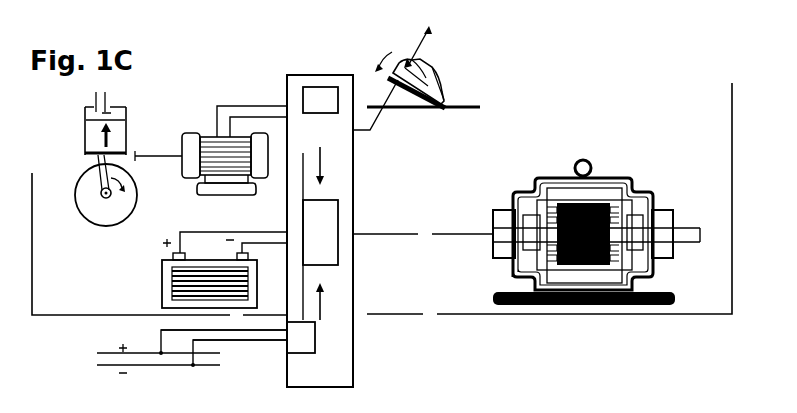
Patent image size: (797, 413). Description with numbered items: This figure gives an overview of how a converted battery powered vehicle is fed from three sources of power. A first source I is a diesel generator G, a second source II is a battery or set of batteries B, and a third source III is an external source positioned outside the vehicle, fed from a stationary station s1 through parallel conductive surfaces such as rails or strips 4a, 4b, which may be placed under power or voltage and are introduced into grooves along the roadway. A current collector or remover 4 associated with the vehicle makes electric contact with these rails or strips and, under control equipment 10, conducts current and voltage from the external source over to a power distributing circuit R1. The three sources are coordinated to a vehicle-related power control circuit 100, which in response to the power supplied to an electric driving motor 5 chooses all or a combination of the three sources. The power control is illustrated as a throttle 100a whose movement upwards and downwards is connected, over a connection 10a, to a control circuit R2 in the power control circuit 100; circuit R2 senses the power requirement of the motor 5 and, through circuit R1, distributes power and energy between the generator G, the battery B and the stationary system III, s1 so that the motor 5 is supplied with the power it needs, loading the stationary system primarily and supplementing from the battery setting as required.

The first power source I is at (129, 157).
The diesel generator G is at (207, 193).
The second power source II is at (191, 270).
The battery B is at (168, 293).
The third power source III is at (162, 356).
The stationary station s1 is at (129, 368).
The rail or strip 4a is at (182, 336).
The current collector 4 is at (199, 331).
The rail or strip 4b is at (211, 342).
The power control circuit 100 is at (322, 218).
The control circuit R2 is at (312, 96).
The power distributing circuit R1 is at (325, 247).
The control equipment 10 is at (302, 335).
The connection 10a is at (363, 131).
The throttle 100a is at (405, 63).
The electric driving motor 5 is at (608, 174).